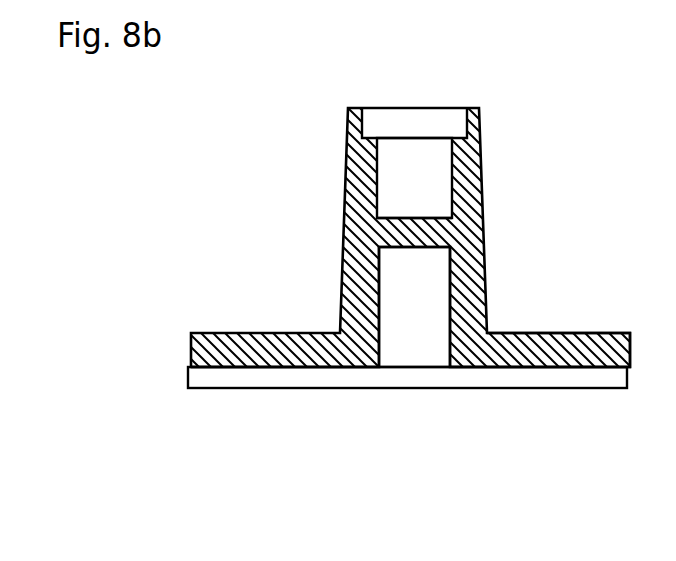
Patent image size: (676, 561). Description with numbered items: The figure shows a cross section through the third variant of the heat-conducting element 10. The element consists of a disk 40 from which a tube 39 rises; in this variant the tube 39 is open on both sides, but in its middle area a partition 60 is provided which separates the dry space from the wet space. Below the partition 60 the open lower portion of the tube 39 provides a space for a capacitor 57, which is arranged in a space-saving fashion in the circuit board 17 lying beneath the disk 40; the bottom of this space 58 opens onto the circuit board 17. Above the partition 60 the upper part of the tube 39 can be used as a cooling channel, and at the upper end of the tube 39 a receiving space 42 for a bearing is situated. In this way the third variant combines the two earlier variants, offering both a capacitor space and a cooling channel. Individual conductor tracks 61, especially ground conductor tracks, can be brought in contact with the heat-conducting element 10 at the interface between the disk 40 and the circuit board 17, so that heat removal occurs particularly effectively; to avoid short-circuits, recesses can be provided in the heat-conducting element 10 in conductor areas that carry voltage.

The heat-conducting element 10 is at (478, 124).
The receiving space 42 is at (367, 127).
The tube 39 is at (346, 166).
The partition 60 is at (462, 226).
The capacitor 57 is at (398, 290).
The cavity bottom 58 is at (411, 352).
The circuit board 17 is at (257, 375).
The conductor tracks 61 is at (303, 367).
The disk 40 is at (572, 353).